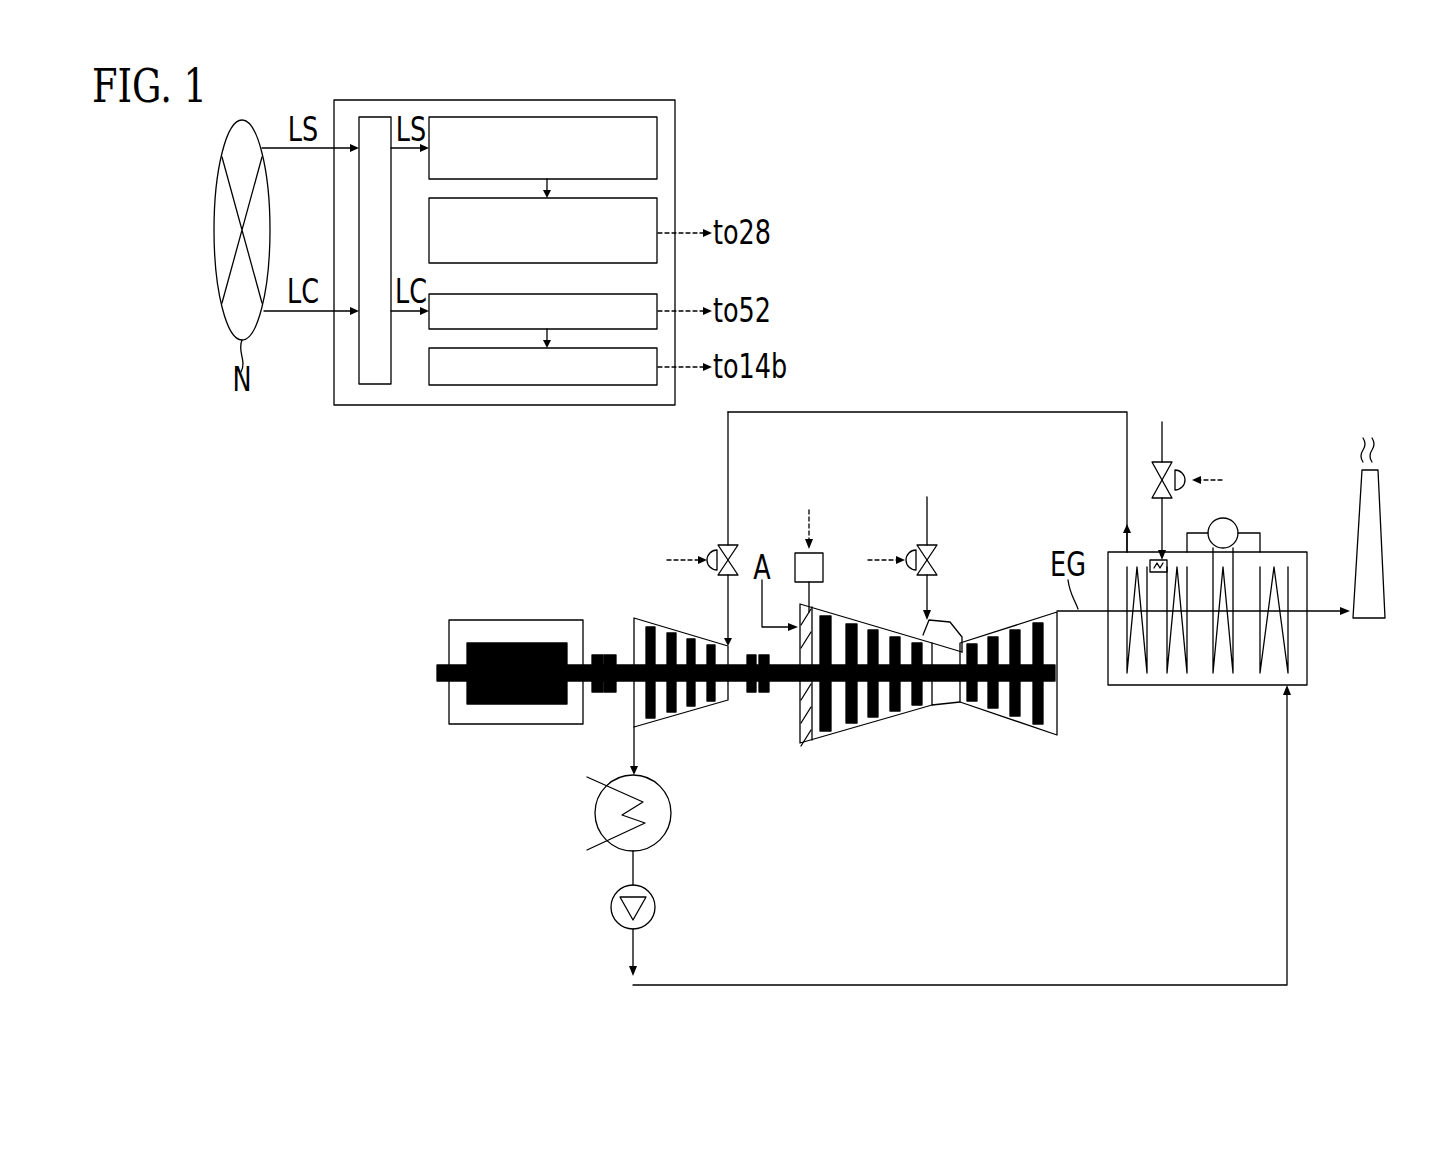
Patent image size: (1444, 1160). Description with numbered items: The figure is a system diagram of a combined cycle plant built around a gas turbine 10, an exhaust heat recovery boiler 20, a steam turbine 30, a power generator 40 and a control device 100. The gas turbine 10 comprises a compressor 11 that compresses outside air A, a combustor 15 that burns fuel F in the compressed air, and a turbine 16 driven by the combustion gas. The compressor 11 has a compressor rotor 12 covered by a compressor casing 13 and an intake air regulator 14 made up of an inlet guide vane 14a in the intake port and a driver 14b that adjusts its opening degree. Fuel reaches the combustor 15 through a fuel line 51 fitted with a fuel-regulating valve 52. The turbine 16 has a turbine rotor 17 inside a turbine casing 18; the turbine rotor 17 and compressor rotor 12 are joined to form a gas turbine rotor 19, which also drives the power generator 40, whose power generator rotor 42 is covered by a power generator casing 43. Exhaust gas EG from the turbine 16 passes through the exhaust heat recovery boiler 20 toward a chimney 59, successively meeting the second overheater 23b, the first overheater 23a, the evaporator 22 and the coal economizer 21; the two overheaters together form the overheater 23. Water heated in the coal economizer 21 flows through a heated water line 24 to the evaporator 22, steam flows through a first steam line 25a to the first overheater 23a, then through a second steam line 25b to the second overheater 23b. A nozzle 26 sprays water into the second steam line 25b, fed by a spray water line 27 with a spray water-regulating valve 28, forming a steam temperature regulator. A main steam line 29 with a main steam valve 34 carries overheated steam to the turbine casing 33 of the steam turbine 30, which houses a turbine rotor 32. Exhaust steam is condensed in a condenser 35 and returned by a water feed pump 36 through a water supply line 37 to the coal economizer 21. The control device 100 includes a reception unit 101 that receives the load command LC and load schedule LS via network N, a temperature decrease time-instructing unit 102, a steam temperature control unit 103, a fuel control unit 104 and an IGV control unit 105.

The gas turbine 10 is at (778, 752).
The compressor 11 is at (811, 752).
The compressor rotor 12 is at (884, 682).
The compressor casing 13 is at (848, 733).
The intake air regulator 14 is at (821, 579).
The inlet guide vane (IGV) 14a is at (812, 612).
The driver 14b is at (806, 612).
The combustor 15 is at (953, 614).
The turbine 16 is at (1014, 725).
The turbine rotor 17 is at (982, 683).
The turbine casing 18 is at (1007, 727).
The gas turbine rotor 19 is at (943, 683).
The exhaust heat recovery boiler 20 is at (1294, 540).
The coal economizer 21 is at (1290, 650).
The evaporator 22 is at (1232, 650).
The overheater 23 is at (1152, 680).
The first overheater 23a is at (1170, 668).
The second overheater 23b is at (1140, 668).
The heated water line 24 is at (1252, 533).
The first steam line 25a is at (1197, 533).
The second steam line 25b is at (1145, 555).
The nozzle 26 is at (1153, 560).
The spray water line 27 is at (1160, 445).
The spray water-regulating valve 28 is at (1167, 462).
The main steam line 29 is at (1032, 412).
The steam turbine 30 is at (657, 650).
The turbine rotor 32 is at (702, 690).
The turbine casing 33 is at (668, 717).
The main steam valve 34 is at (718, 550).
The condenser 35 is at (595, 808).
The water feed pump 36 is at (611, 905).
The water supply line 37 is at (985, 985).
The power generator 40 is at (477, 624).
The power generator rotor 42 is at (525, 643).
The power generator casing 43 is at (485, 620).
The fuel line 51 is at (940, 515).
The fuel-regulating valve 52 is at (940, 560).
The chimney 59 is at (1390, 537).
The control device 100 is at (521, 410).
The reception unit 101 is at (375, 384).
The temperature decrease time-instructing unit 102 is at (658, 150).
The steam temperature control unit 103 is at (658, 207).
The fuel control unit 104 is at (658, 302).
The IGV control unit 105 is at (658, 358).